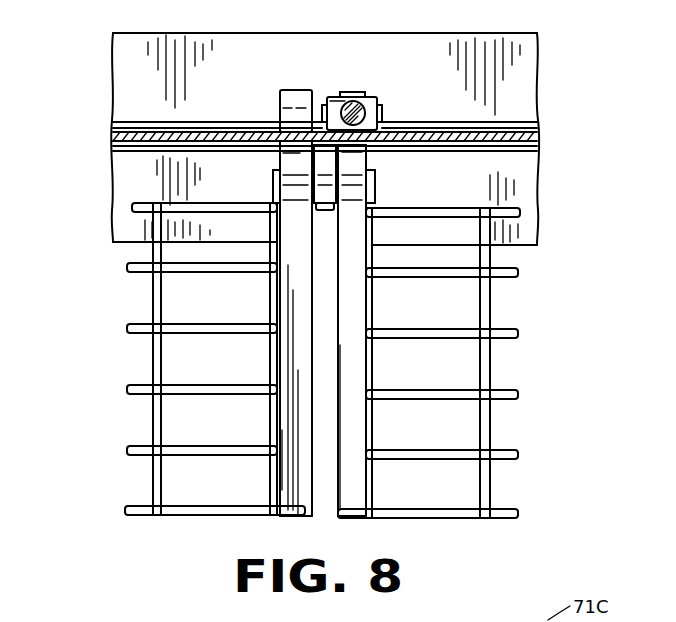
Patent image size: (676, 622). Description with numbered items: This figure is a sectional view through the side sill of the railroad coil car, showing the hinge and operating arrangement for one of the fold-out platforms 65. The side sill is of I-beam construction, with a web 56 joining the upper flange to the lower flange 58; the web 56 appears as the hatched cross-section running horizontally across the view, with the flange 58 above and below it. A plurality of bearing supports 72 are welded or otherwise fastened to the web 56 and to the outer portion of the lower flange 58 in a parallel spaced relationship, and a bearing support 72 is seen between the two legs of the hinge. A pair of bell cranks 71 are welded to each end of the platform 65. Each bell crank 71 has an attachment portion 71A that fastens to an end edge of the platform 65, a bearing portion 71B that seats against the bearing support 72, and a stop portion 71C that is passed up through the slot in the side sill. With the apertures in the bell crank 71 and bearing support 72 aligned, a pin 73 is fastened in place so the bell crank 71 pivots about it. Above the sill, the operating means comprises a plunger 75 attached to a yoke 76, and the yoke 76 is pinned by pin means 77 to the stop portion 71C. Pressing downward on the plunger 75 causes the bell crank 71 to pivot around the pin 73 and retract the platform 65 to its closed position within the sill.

The web 56 is at (505, 140).
The lower flange 58 is at (140, 62).
The platform 65 is at (133, 512).
The bell crank 71 is at (285, 510).
The attachment portion 71A is at (352, 347).
The bearing portion 71B is at (360, 160).
The stop portion 71C is at (285, 92).
The bearing support 72 is at (325, 167).
The pin 73 is at (375, 188).
The plunger 75 is at (357, 103).
The yoke 76 is at (337, 100).
The pin means 77 is at (382, 110).